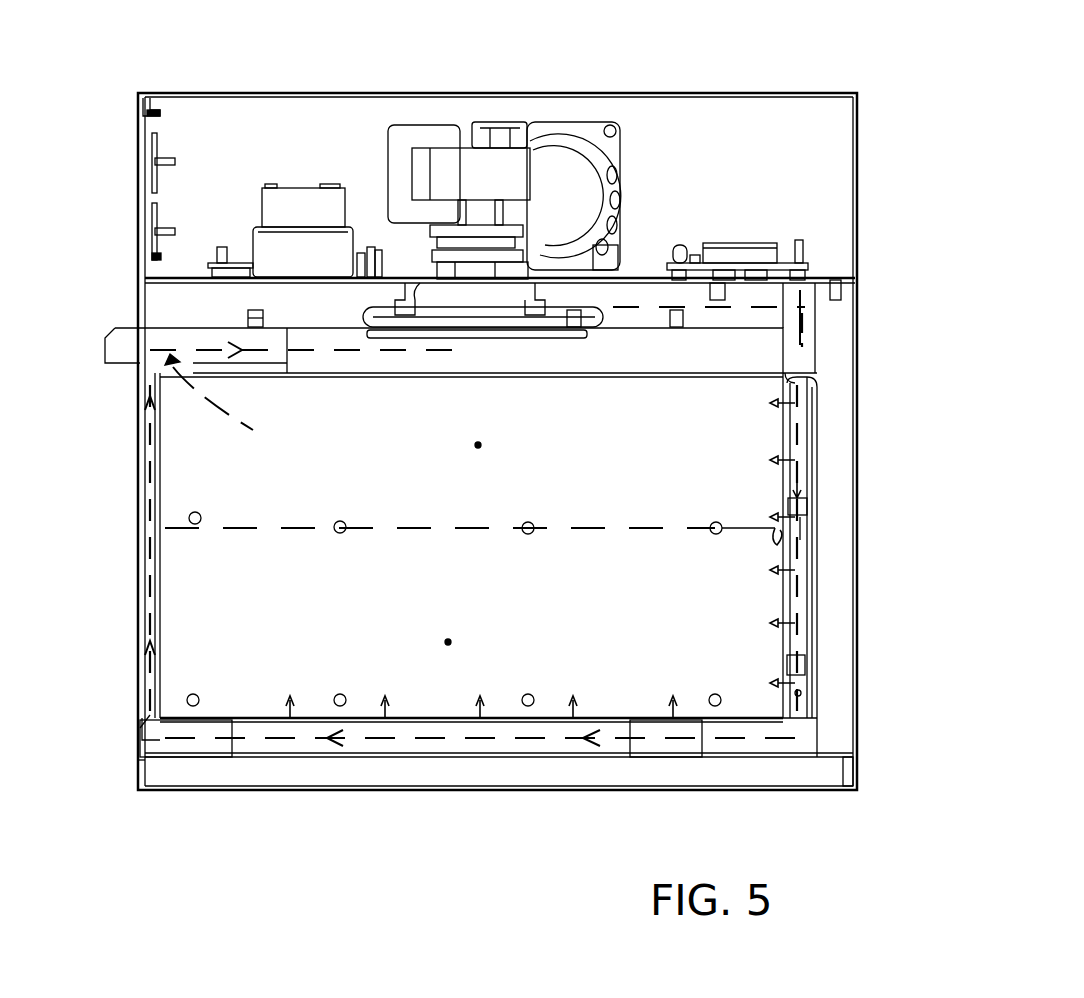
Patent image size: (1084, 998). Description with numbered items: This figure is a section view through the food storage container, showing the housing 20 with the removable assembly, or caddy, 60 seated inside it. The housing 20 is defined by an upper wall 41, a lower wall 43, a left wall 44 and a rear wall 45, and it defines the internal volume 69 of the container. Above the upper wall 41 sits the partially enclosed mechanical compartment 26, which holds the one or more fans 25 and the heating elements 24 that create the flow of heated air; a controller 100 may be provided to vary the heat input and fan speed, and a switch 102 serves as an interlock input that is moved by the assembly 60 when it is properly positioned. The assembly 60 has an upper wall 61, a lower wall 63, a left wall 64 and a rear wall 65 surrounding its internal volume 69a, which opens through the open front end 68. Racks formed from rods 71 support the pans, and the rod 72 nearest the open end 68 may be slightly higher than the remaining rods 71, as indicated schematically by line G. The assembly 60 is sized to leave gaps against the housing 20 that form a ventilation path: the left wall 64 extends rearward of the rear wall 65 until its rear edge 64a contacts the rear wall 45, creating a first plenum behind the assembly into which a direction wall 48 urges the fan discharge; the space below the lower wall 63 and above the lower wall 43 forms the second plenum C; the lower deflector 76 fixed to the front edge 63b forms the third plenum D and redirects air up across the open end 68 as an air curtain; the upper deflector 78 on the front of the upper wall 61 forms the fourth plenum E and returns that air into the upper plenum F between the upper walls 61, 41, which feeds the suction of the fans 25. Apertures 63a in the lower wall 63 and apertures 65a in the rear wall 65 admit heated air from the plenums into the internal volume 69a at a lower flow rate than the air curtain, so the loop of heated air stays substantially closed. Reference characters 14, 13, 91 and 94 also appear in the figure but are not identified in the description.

The housing 20 is at (453, 93).
The heating element 24 is at (397, 317).
The fan 25 is at (541, 318).
The mechanical compartment 26 is at (670, 148).
The removable assembly 60 is at (670, 372).
The upper wall 41 is at (630, 330).
The controller 100 is at (757, 257).
The direction wall 48 is at (802, 320).
The rear wall 45 is at (817, 352).
The left wall 44 is at (755, 360).
The upper deflector 78 is at (107, 332).
The air inlet flow 14 is at (233, 427).
The upper wall 61 is at (610, 372).
The internal volume 69a is at (478, 444).
The open front end 68 is at (148, 543).
The rod 72 is at (200, 513).
The rods 71 is at (344, 522).
The opening 91 is at (532, 523).
The rear wall 65 is at (785, 503).
The apertures 65a is at (780, 530).
The switch 102 is at (800, 507).
The vane 13 is at (797, 537).
The left wall 64 is at (800, 650).
The rear edge 64a is at (815, 700).
The lower wall 63 is at (262, 717).
The apertures 63a is at (297, 720).
The front edge 63b is at (187, 717).
The lower wall 43 is at (543, 757).
The block 94 is at (657, 742).
The lower deflector 76 is at (167, 753).
The internal volume 69 is at (448, 643).
The upper plenum F is at (332, 340).
The fourth plenum E is at (170, 350).
The line G is at (443, 532).
The third plenum D is at (193, 740).
The second plenum C is at (462, 737).